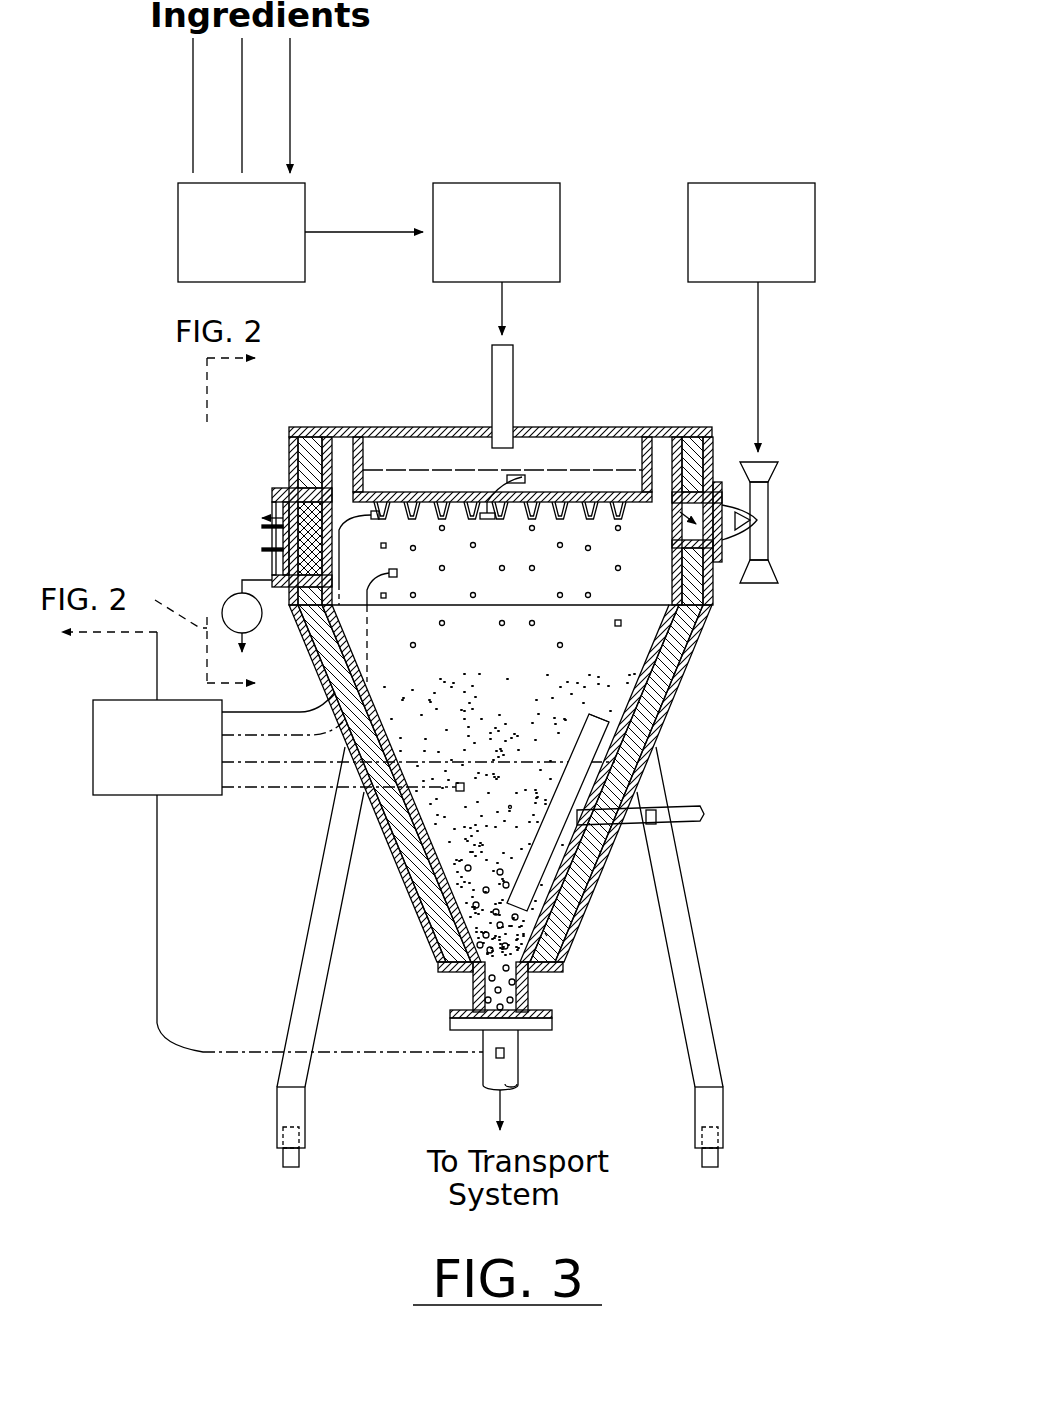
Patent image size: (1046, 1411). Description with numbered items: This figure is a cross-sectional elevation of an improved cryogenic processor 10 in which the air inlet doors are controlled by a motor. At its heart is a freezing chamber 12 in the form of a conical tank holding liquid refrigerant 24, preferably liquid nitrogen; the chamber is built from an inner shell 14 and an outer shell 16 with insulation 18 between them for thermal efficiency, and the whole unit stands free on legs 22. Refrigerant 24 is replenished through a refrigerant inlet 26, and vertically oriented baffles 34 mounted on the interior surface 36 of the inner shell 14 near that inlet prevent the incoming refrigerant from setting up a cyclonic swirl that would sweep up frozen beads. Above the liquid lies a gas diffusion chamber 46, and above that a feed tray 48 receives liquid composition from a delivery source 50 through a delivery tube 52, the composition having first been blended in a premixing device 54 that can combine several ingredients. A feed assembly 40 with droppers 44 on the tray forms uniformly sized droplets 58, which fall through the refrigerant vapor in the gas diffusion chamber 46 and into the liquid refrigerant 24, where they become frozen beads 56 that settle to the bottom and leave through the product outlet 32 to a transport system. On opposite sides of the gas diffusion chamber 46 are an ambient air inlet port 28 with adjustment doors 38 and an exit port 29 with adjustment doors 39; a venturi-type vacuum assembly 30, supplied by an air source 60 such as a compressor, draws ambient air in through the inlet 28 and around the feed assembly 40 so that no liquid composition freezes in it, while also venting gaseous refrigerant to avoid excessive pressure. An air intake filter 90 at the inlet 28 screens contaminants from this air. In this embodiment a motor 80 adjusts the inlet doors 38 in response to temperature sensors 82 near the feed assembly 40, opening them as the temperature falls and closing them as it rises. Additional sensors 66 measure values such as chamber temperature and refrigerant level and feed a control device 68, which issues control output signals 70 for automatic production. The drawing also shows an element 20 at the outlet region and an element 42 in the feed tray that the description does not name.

The cryogenic processor 10 is at (765, 1190).
The freezing chamber 12 is at (543, 838).
The inner shell 14 is at (650, 705).
The outer shell 16 is at (697, 668).
The insulation 18 is at (678, 693).
The outlet valve 20 is at (466, 978).
The legs 22 is at (712, 1052).
The refrigerant 24 is at (612, 728).
The refrigerant inlet 26 is at (703, 816).
The ambient air inlet port 28 is at (262, 518).
The exit port 29 is at (722, 538).
The vacuum assembly 30 is at (783, 468).
The product outlet 32 is at (520, 1047).
The baffles 34 is at (510, 807).
The interior surface 36 is at (545, 933).
The adjustment doors 38 is at (283, 560).
The adjustment doors 39 is at (717, 552).
The feed assembly 40 is at (605, 470).
The perforated plate 42 is at (438, 478).
The droppers 44 is at (541, 505).
The gas diffusion chamber 46 is at (630, 592).
The feed tray 48 is at (381, 498).
The delivery source 50 is at (476, 253).
The delivery tube 52 is at (493, 375).
The premixing device 54 is at (220, 253).
The beads 56 is at (482, 907).
The droplets 58 is at (621, 625).
The air source 60 is at (731, 253).
The sensors 66 is at (435, 806).
The control device 68 is at (136, 770).
The control output signals 70 is at (108, 632).
The motor 80 is at (227, 598).
The temperature sensors 82 is at (525, 475).
The air intake filter 90 is at (340, 445).